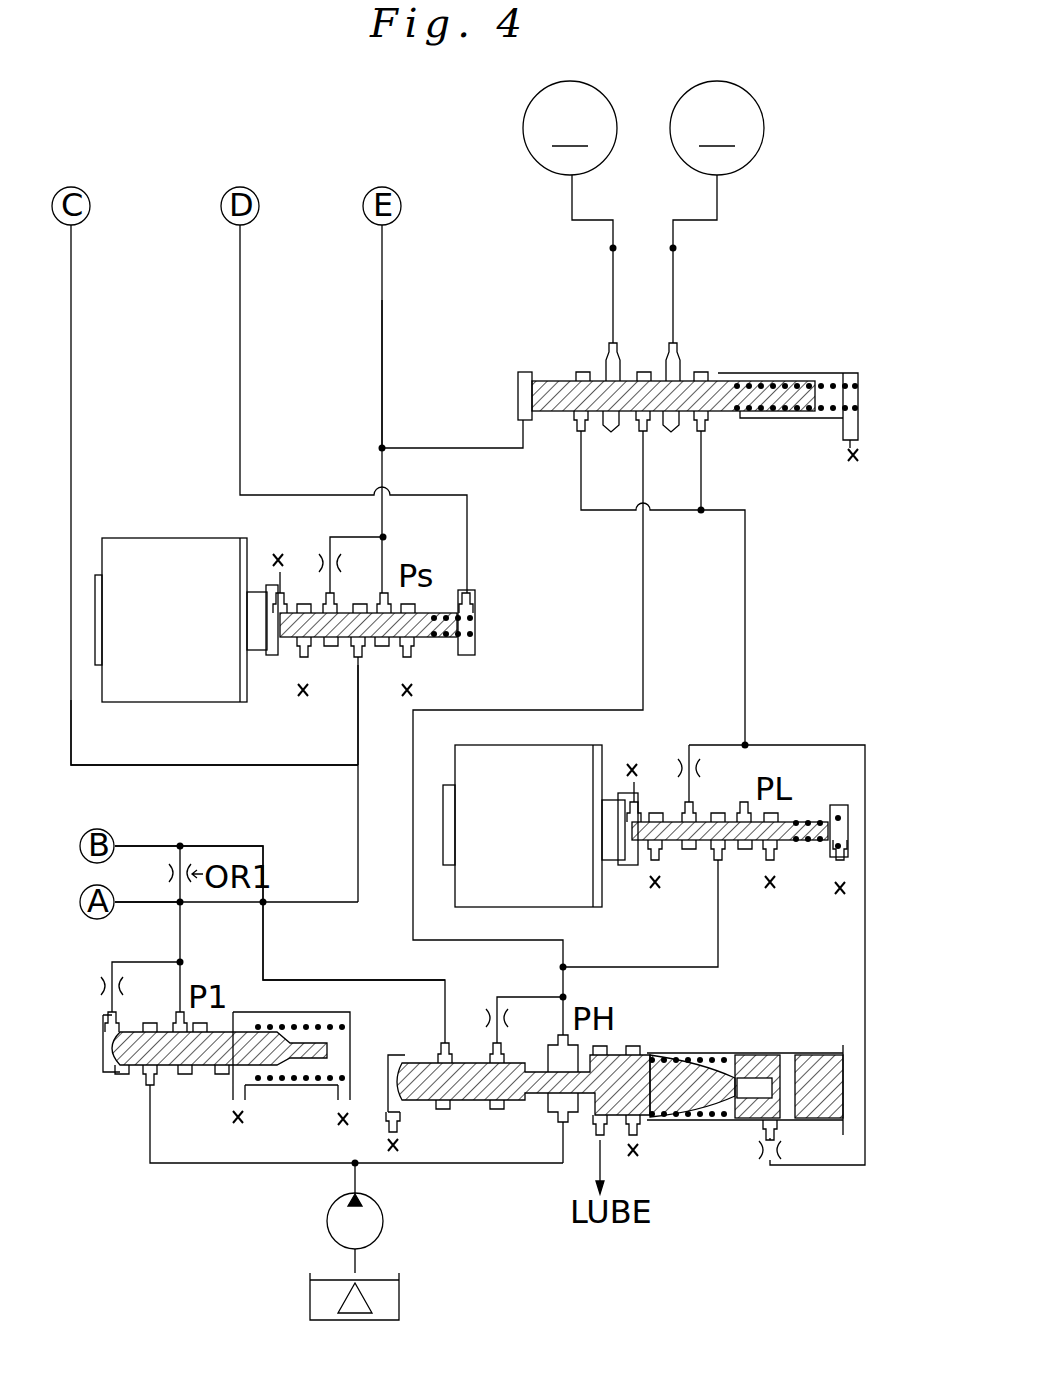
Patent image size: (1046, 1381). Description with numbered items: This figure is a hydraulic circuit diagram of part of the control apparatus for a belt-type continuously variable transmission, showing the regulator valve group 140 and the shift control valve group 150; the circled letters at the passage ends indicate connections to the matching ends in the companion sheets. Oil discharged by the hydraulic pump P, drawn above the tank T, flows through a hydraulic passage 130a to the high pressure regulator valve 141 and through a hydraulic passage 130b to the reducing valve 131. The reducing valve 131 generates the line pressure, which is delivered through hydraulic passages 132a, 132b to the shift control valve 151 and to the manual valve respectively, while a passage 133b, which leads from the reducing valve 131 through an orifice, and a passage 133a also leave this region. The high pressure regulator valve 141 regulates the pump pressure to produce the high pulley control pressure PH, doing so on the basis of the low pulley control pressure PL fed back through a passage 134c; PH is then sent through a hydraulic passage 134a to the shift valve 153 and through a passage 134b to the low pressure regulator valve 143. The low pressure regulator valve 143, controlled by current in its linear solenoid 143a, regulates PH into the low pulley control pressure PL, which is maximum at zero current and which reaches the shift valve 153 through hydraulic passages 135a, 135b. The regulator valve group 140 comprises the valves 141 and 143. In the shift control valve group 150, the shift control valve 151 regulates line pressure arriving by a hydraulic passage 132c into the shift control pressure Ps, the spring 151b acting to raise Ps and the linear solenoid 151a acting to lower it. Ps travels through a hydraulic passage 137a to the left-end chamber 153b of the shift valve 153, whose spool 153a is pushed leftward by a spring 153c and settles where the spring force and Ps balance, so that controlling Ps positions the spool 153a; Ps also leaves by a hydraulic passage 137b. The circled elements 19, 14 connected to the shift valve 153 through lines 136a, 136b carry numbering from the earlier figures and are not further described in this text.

The clutch 19 is at (570, 128).
The clutch 14 is at (717, 128).
The oil passage 136a is at (718, 196).
The oil passage 136b is at (572, 196).
The hydraulic passage 137a is at (452, 449).
The hydraulic passage 137b is at (382, 344).
The shift control valve group 150 is at (477, 298).
The shift valve 153 is at (742, 350).
The spool 153a is at (700, 422).
The left-end chamber 153b is at (517, 397).
The spring 153c is at (818, 376).
The shift control valve 151 is at (207, 520).
The linear solenoid 151a is at (214, 628).
The spring 151b is at (476, 633).
The hydraulic passage 135a is at (703, 482).
The hydraulic passage 135b is at (582, 490).
The hydraulic passage 134a is at (643, 640).
The hydraulic passage 134b is at (718, 940).
The hydraulic passage 134c is at (795, 1168).
The regulator valve group 140 is at (777, 655).
The low pressure regulator valve 143 is at (653, 744).
The linear solenoid 143a is at (556, 843).
The high pressure regulator valve 141 is at (679, 1037).
The reducing valve 131 is at (129, 1083).
The hydraulic passage 132a is at (160, 763).
The hydraulic passage 132b is at (135, 905).
The hydraulic passage 132c is at (358, 705).
The oil passage 133a is at (230, 845).
The hydraulic passage 133b is at (150, 836).
The hydraulic passage 130a is at (488, 1165).
The hydraulic passage 130b is at (200, 1165).
The hydraulic pump P is at (381, 1232).
The oil tank T is at (400, 1296).